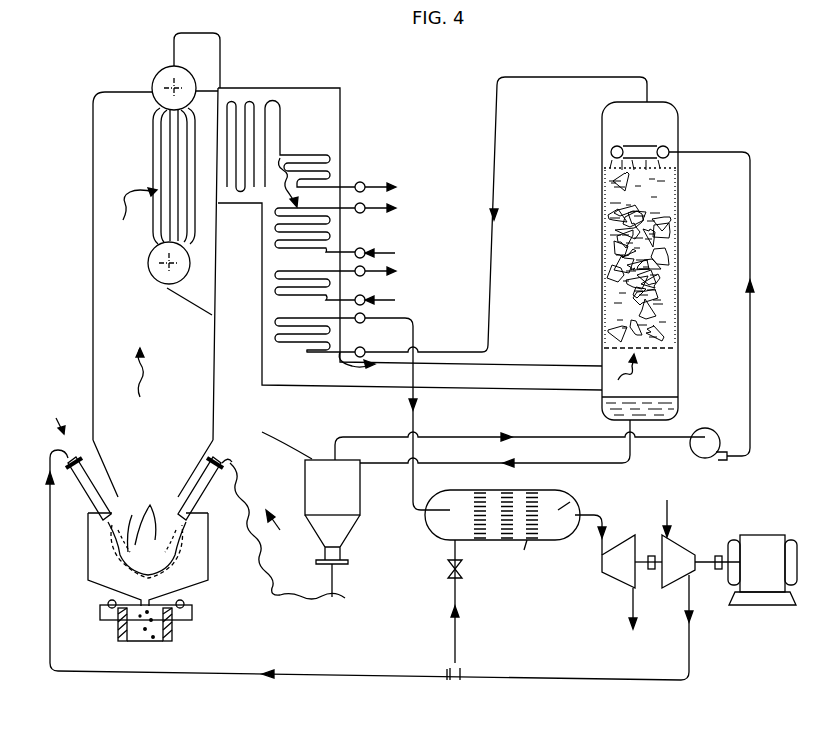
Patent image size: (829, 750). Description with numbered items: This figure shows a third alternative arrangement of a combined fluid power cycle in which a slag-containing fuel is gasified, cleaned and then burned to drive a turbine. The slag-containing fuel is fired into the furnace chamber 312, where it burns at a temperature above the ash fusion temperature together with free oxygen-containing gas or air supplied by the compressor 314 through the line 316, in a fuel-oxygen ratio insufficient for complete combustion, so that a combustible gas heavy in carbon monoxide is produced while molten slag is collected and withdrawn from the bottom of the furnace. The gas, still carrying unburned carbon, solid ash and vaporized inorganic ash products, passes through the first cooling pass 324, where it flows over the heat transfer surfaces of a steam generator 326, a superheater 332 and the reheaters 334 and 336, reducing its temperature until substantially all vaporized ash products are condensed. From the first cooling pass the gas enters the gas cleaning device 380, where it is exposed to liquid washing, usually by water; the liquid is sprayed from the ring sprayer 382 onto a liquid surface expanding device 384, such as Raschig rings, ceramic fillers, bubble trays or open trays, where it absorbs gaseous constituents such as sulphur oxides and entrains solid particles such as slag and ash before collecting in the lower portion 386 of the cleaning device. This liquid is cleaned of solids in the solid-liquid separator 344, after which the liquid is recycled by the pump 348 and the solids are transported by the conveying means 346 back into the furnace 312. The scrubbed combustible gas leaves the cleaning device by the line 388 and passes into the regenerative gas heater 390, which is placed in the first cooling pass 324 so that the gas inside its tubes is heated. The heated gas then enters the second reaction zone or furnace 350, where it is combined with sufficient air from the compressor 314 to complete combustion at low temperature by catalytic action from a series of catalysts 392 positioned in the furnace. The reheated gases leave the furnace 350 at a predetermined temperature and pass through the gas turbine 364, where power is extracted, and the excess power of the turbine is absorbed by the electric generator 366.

The furnace chamber 312 is at (159, 469).
The compressor 314 is at (678, 551).
The line 316 is at (392, 675).
The first cooling pass 324 is at (341, 131).
The steam generator 326 is at (152, 160).
The superheater 332 is at (279, 118).
The reheater 334 is at (331, 226).
The reheater 336 is at (276, 282).
The solid-liquid separator 344 is at (350, 479).
The conveying means 346 is at (300, 594).
The pump 348 is at (712, 455).
The furnace 350 is at (462, 530).
The gas turbine 364 is at (622, 566).
The electric generator 366 is at (762, 586).
The gas cleaning device 380 is at (662, 261).
The ring sprayer 382 is at (636, 147).
The liquid surface expanding device 384 is at (668, 207).
The lower portion 386 is at (640, 406).
The line 388 is at (494, 236).
The regenerative gas heater 390 is at (276, 336).
The catalysts 392 is at (480, 508).